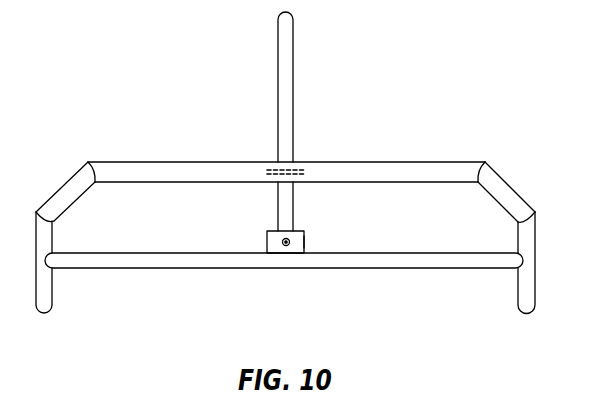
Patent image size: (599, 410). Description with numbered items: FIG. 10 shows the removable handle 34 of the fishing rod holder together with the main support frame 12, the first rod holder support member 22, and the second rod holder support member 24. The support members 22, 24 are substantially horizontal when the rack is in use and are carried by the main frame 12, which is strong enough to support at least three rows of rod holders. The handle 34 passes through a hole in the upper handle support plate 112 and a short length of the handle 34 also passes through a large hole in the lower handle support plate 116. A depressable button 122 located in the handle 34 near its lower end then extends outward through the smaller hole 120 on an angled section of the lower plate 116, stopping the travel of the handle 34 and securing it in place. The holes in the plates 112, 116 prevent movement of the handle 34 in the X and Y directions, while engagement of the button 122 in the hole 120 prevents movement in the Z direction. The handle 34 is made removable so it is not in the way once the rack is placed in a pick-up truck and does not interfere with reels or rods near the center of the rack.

The main support frame 12 is at (510, 186).
The first rod holder support member 22 is at (370, 161).
The second rod holder support member 24 is at (388, 253).
The removable handle 34 is at (295, 97).
The upper handle support plate 112 is at (297, 168).
The lower handle support plate 116 is at (304, 243).
The smaller hole 120 is at (282, 242).
The depressable button 122 is at (290, 239).